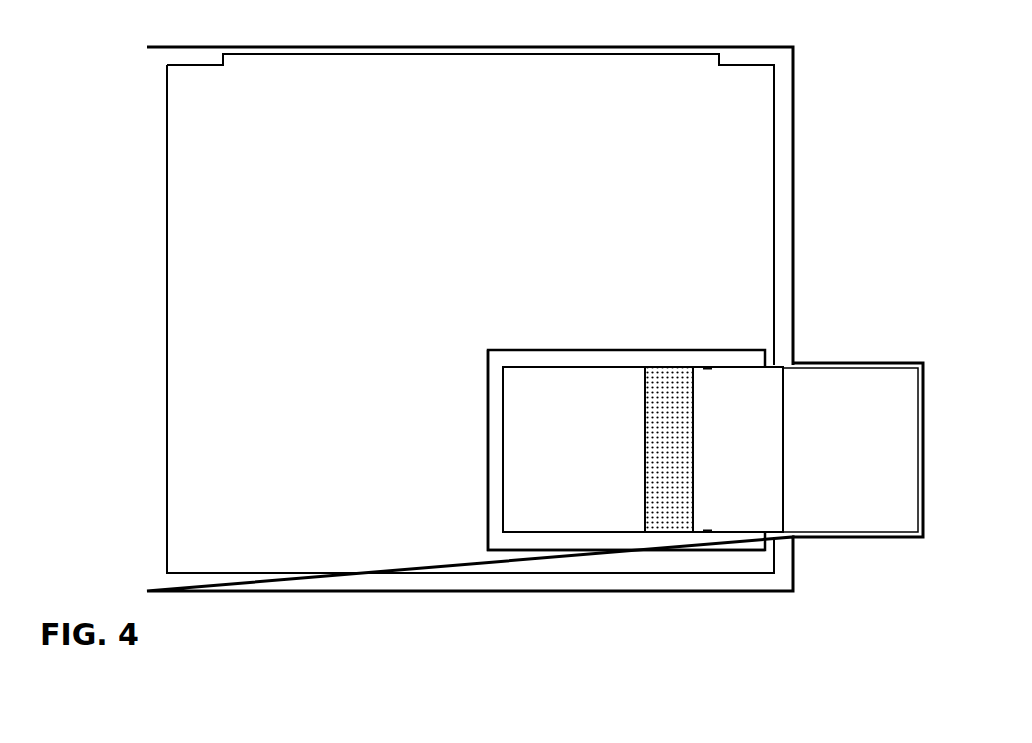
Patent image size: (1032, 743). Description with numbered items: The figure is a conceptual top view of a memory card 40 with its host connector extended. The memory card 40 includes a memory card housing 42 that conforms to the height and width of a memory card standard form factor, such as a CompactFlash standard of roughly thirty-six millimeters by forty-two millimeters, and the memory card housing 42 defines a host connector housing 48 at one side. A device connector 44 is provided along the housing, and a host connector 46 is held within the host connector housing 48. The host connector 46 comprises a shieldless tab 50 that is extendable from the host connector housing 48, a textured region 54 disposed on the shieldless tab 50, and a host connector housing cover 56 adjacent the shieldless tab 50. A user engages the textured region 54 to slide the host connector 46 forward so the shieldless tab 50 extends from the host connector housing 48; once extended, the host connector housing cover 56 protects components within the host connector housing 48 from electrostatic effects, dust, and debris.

The memory card 40 is at (100, 98).
The memory card housing 42 is at (755, 173).
The device connector 44 is at (530, 62).
The host connector 46 is at (583, 330).
The host connector housing 48 is at (496, 508).
The shieldless tab 50 is at (853, 385).
The textured region 54 is at (667, 374).
The host connector housing cover 56 is at (527, 403).